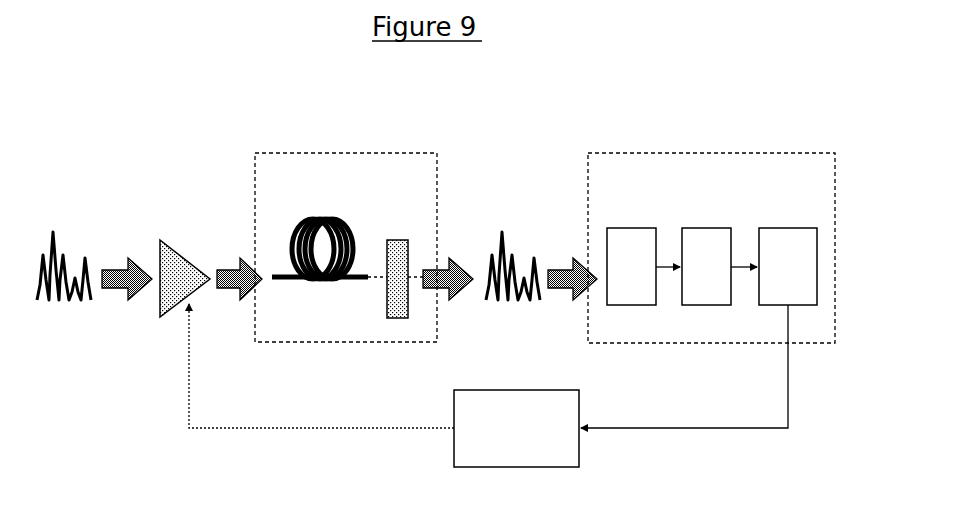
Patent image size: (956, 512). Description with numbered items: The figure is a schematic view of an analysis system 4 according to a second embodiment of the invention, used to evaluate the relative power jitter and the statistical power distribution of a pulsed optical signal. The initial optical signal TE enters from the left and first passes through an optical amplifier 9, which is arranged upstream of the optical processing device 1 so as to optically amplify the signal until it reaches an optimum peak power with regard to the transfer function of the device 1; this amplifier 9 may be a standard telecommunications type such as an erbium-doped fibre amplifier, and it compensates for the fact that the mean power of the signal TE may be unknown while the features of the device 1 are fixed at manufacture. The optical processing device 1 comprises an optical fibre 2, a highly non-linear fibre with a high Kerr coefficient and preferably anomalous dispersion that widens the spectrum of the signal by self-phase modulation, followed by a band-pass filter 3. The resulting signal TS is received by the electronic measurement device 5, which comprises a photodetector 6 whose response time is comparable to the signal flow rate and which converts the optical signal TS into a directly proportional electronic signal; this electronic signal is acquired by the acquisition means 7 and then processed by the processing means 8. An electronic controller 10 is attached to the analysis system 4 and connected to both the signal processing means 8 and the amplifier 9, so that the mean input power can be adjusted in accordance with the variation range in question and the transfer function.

The optical processing device 1 is at (330, 147).
The optical fibre 2 is at (338, 222).
The band-pass filter 3 is at (398, 243).
The analysis system 4 is at (132, 98).
The electronic measurement device 5 is at (710, 147).
The photodetector 6 is at (627, 236).
The signal acquisition means 7 is at (704, 236).
The signal processing means 8 is at (781, 236).
The optical amplifier 9 is at (181, 262).
The electronic controller 10 is at (505, 398).
The optical signal TE is at (70, 230).
The optical signal TS is at (521, 230).